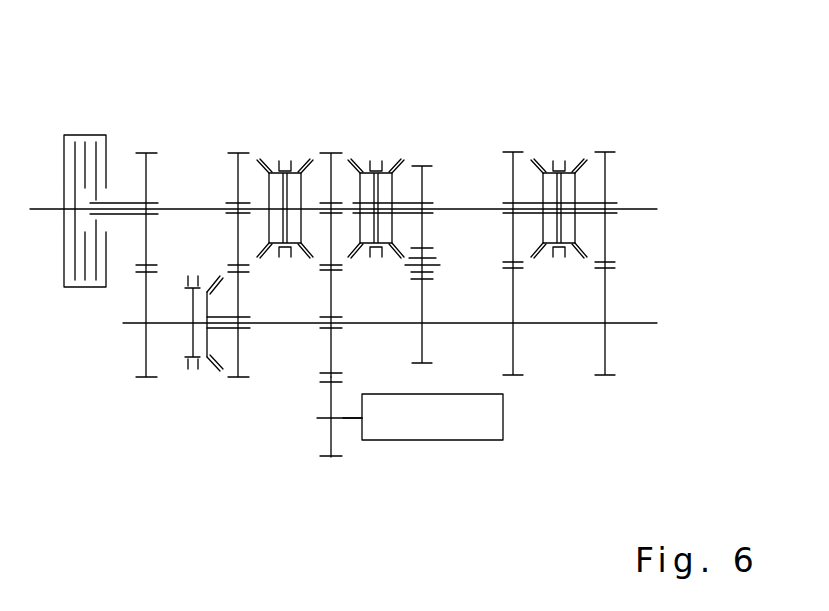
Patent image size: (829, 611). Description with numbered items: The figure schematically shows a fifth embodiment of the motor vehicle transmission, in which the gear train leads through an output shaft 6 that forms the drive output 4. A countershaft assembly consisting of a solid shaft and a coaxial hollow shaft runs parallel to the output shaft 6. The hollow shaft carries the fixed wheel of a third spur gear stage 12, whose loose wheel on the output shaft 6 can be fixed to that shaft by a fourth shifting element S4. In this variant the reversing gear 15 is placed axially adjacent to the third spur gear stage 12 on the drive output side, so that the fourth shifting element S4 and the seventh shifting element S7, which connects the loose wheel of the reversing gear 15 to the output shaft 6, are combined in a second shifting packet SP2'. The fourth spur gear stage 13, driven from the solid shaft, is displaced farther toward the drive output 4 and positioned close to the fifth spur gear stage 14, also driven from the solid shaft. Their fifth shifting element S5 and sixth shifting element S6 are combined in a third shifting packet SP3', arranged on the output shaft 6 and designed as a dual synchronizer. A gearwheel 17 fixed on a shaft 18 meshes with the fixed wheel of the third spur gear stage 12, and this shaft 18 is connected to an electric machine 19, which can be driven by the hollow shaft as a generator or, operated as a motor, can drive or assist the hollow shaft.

The drive output 4 is at (641, 206).
The output shaft 6 is at (457, 210).
The third spur gear stage 12 is at (328, 152).
The fourth spur gear stage 13 is at (515, 150).
The fifth spur gear stage 14 is at (607, 150).
The reversing gear 15 is at (428, 162).
The gearwheel 17 is at (335, 457).
The shaft 18 is at (343, 420).
The electric machine 19 is at (408, 430).
The fourth shifting element S4 is at (350, 158).
The fifth shifting element S5 is at (533, 158).
The sixth shifting element S6 is at (585, 158).
The seventh shifting element S7 is at (401, 158).
The second shifting packet SP2' is at (392, 162).
The third shifting packet SP3' is at (554, 162).